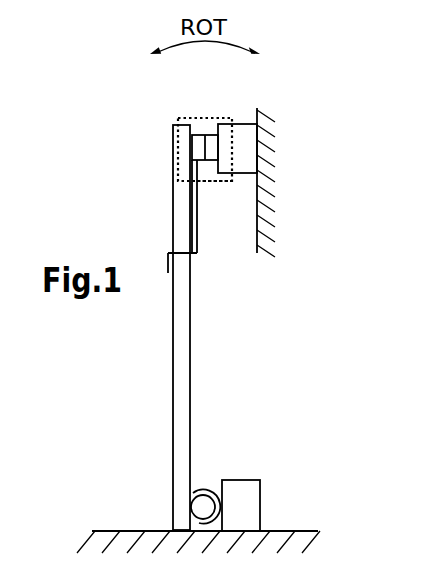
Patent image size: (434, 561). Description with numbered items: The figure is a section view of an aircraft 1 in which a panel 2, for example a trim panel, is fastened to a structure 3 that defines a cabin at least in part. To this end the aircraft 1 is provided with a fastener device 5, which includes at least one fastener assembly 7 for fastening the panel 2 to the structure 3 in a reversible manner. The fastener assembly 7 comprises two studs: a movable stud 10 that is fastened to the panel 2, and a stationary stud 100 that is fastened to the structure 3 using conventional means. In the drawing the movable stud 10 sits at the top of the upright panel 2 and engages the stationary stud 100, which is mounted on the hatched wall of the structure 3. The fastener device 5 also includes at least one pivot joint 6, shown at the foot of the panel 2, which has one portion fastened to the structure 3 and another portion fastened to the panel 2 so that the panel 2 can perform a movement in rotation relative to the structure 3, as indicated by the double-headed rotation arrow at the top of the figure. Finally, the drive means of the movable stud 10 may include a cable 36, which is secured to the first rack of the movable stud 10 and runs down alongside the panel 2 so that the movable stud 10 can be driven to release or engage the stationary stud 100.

The aircraft 1 is at (347, 178).
The panel 2 is at (172, 345).
The structure 3 is at (265, 248).
The fastener device 5 is at (202, 81).
The pivot joint 6 is at (211, 458).
The fastener assembly 7 is at (220, 190).
The movable stud 10 is at (195, 110).
The cable 36 is at (197, 243).
The stationary stud 100 is at (212, 110).